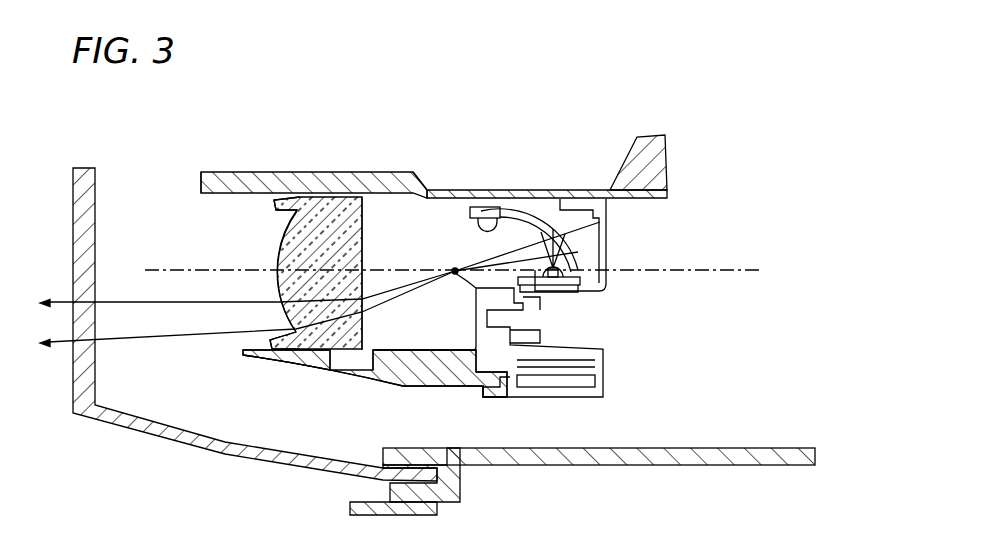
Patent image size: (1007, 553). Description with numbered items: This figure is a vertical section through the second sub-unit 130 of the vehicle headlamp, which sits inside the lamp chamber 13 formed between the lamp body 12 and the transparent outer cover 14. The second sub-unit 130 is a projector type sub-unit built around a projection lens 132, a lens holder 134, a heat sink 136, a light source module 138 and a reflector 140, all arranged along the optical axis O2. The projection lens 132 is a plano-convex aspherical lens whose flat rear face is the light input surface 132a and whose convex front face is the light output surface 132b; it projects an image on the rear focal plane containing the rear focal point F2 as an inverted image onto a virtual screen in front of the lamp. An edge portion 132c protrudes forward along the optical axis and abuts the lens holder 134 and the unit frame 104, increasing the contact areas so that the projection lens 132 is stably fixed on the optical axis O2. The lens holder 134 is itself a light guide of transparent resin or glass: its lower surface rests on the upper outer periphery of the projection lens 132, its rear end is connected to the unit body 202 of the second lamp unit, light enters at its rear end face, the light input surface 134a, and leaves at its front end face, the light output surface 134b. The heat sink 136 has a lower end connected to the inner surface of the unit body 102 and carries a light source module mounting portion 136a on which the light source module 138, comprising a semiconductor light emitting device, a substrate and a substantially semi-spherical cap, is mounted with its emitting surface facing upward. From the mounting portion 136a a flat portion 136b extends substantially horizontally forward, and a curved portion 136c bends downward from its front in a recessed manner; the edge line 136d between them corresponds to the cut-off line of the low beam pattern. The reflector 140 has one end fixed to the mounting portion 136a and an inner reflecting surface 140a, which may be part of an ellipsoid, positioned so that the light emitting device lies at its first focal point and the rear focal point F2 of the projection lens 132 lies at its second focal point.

The lamp body 12 is at (527, 468).
The lamp chamber 13 is at (270, 403).
The outer cover 14 is at (140, 433).
The unit body 102 is at (363, 371).
The unit frame 104 is at (283, 367).
The second sub-unit 130 is at (716, 209).
The projection lens 132 is at (276, 292).
The light input surface 132a is at (361, 250).
The light output surface 132b is at (277, 258).
The edge portion 132c is at (293, 212).
The lens holder 134 is at (363, 172).
The light input surface 134a is at (424, 186).
The light output surface 134b is at (200, 181).
The heat sink 136 is at (503, 388).
The light source module mounting portion 136a is at (552, 303).
The flat portion 136b is at (493, 267).
The curved portion 136c is at (463, 378).
The edge line 136d is at (452, 278).
The light source module 138 is at (604, 243).
The reflector 140 is at (547, 189).
The reflecting surface 140a is at (478, 207).
The unit body 202 is at (577, 189).
The optical axis O2 is at (146, 268).
The rear focal point F2 is at (453, 270).